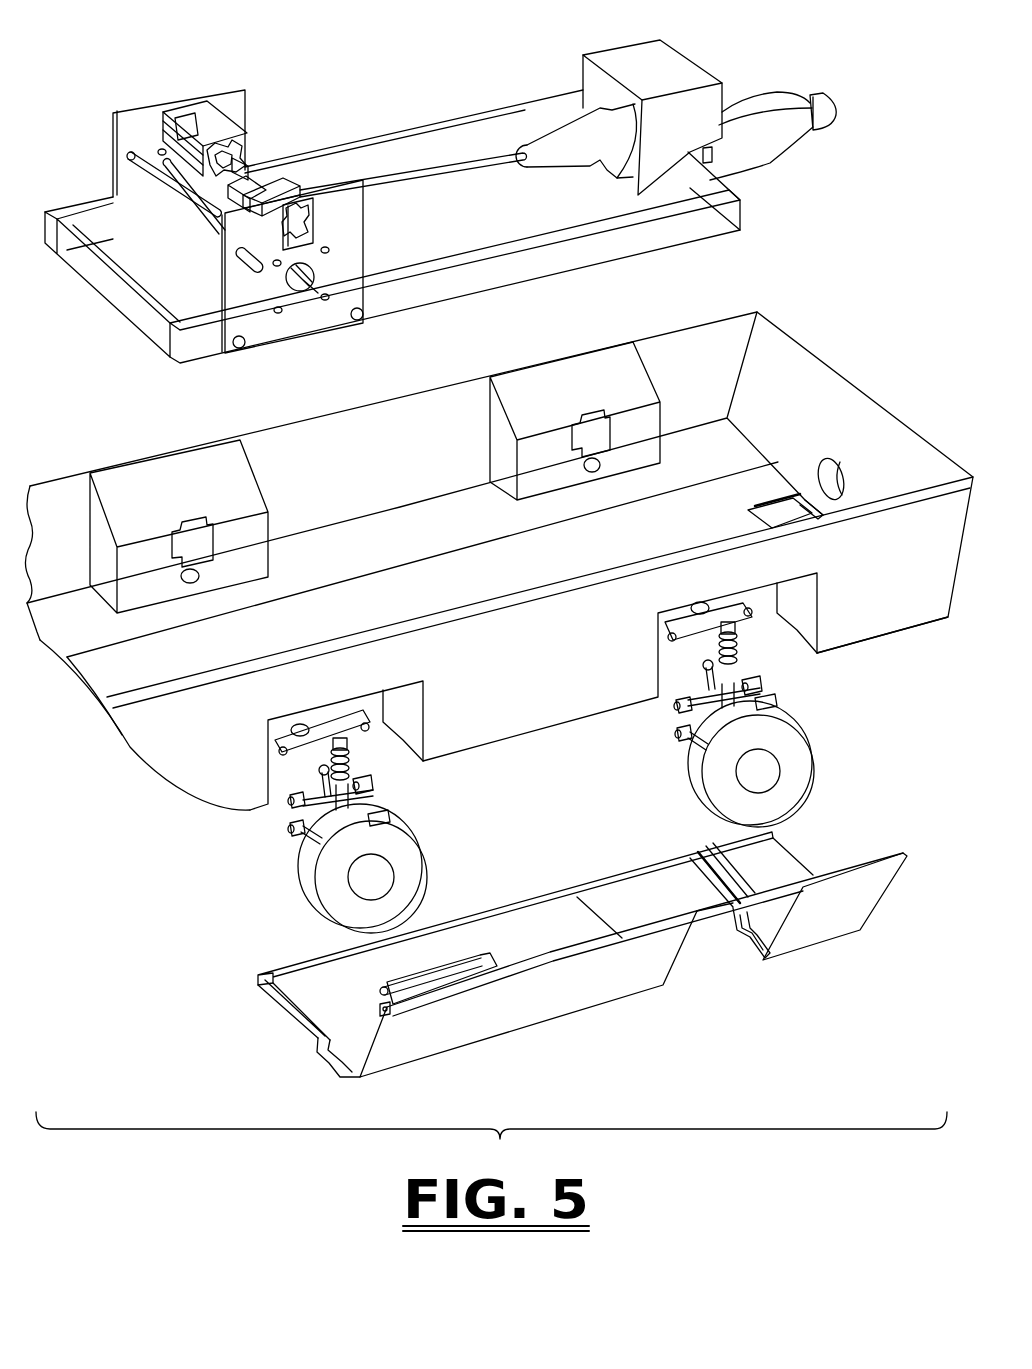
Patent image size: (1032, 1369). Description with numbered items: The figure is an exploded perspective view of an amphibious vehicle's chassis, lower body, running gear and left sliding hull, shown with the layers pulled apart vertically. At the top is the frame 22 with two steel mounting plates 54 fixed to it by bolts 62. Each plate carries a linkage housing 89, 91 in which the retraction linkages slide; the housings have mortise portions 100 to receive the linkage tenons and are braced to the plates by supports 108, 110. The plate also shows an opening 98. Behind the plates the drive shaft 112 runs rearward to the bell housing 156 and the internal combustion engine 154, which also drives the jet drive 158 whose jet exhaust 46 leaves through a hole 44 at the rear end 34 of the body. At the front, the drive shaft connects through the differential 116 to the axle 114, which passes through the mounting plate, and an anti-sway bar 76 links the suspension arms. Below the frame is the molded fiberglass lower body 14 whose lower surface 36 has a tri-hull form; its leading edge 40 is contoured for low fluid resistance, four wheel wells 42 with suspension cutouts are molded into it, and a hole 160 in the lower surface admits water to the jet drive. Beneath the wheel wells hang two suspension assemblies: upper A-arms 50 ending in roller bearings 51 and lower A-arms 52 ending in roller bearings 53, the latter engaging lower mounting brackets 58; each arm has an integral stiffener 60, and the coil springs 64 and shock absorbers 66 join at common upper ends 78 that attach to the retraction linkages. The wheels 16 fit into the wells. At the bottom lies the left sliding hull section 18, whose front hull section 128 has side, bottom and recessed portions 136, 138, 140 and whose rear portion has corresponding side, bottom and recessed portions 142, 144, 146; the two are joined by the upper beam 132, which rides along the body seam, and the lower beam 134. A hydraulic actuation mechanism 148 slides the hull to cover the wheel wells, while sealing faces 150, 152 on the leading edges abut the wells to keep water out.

The lower body 14 is at (533, 658).
The wheels 16 is at (312, 885).
The left sliding hull section 18 is at (806, 980).
The frame 22 is at (93, 198).
The rear end 34 is at (845, 391).
The lower surface 36 is at (476, 579).
The leading edge 40 is at (61, 664).
The wheel wells 42 is at (167, 500).
The hole 44 is at (840, 470).
The jet exhaust 46 is at (824, 98).
The upper A-arms 50 is at (372, 797).
The roller bearings 51 is at (366, 778).
The lower A-arms 52 is at (305, 840).
The roller bearings 53 is at (290, 830).
The mounting plates 54 is at (125, 138).
The lower mounting brackets 58 is at (341, 725).
The stiffener 60 is at (318, 797).
The bolts 62 is at (358, 319).
The coil springs 64 is at (352, 762).
The shock absorbers 66 is at (385, 818).
The anti-sway bar 76 is at (212, 233).
The upper ends 78 is at (335, 757).
The linkage housing 89 is at (189, 112).
The linkage housing 91 is at (283, 188).
The opening 98 is at (316, 240).
The mortise portions 100 is at (226, 142).
The supports 108 is at (169, 142).
The supports 110 is at (243, 167).
The drive shaft 112 is at (433, 173).
The axle 114 is at (203, 202).
The differential 116 is at (241, 197).
The front hull section 128 is at (356, 1080).
The upper beam 132 is at (710, 908).
The lower beam 134 is at (621, 880).
The side portion 136 is at (515, 1006).
The bottom portion 138 is at (325, 1067).
The recessed portion 140 is at (315, 996).
The side portion 142 is at (808, 920).
The bottom portion 144 is at (755, 945).
The recessed portion 146 is at (739, 881).
The actuation mechanism 148 is at (427, 974).
The sealing face 150 is at (288, 1008).
The sealing face 152 is at (710, 863).
The internal combustion engine 154 is at (630, 58).
The bell housing 156 is at (568, 158).
The jet drive 158 is at (778, 138).
The hole 160 is at (770, 500).